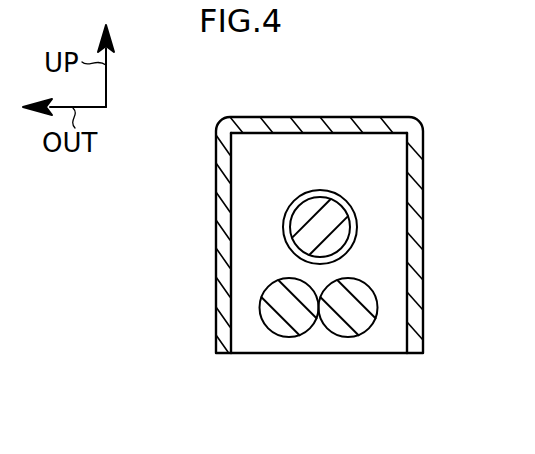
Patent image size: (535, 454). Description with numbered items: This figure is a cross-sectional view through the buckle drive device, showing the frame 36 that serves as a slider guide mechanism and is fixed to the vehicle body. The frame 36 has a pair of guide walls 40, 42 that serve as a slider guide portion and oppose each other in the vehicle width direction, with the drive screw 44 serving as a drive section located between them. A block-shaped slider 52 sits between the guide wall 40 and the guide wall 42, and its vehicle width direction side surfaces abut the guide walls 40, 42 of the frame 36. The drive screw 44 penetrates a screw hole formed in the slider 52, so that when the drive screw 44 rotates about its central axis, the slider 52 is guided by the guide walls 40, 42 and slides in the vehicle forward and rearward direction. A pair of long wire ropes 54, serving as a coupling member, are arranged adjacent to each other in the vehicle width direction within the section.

The frame 36 is at (430, 118).
The guide wall 40 is at (216, 302).
The guide wall 42 is at (423, 294).
The drive screw 44 is at (357, 223).
The slider 52 is at (385, 335).
The wire rope 54 is at (283, 330).